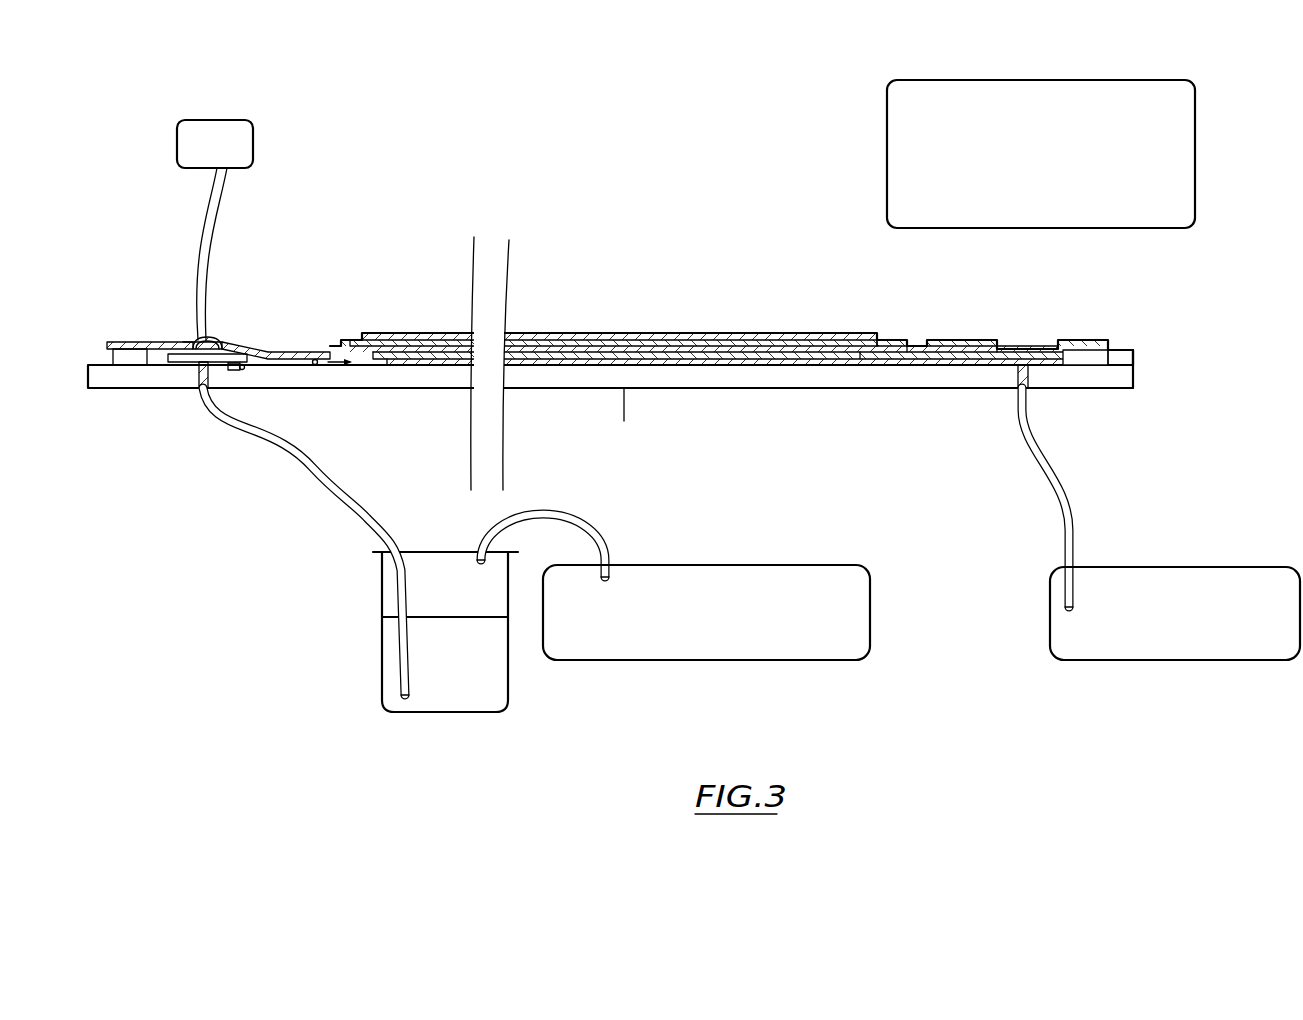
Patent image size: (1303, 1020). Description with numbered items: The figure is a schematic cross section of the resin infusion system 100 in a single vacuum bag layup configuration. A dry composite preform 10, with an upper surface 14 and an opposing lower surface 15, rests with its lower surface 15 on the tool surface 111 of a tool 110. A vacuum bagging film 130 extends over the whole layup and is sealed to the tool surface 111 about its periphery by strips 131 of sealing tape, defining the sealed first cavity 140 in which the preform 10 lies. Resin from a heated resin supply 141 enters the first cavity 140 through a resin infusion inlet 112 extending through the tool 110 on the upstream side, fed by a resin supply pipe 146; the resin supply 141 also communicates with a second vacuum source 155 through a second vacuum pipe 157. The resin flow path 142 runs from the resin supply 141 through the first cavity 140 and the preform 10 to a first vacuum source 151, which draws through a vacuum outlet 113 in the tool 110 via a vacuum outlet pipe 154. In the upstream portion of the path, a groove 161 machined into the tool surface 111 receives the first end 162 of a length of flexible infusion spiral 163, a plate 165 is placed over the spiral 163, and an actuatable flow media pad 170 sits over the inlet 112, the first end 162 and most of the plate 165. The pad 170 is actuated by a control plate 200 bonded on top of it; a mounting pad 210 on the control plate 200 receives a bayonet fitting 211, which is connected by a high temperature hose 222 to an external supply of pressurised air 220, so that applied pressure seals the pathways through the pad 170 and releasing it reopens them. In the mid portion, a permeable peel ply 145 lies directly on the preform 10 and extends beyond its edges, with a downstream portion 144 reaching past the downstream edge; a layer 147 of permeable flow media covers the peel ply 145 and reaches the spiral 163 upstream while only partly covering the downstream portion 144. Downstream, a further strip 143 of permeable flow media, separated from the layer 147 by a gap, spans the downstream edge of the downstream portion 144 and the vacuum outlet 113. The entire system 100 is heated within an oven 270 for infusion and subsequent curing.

The composite preform 10 is at (658, 367).
The upper surface 14 is at (655, 352).
The lower surface 15 is at (769, 367).
The resin infusion system 100 is at (515, 257).
The tool 110 is at (551, 377).
The tool surface 111 is at (1133, 365).
The resin infusion inlet 112 is at (190, 384).
The vacuum outlet 113 is at (1017, 382).
The vacuum bagging film 130 is at (556, 334).
The strips of sealing tape 131 is at (128, 357).
The first cavity 140 is at (468, 327).
The resin supply 141 is at (456, 656).
The resin flow path 142 is at (338, 372).
The strip of permeable flow media 143 is at (1088, 358).
The downstream portion of the peel ply 144 is at (903, 367).
The peel ply 145 is at (775, 340).
The resin supply pipe 146 is at (363, 500).
The layer of permeable flow media 147 is at (699, 346).
The first vacuum source 151 is at (1222, 636).
The vacuum outlet pipe 154 is at (1060, 537).
The second vacuum source 155 is at (660, 636).
The second vacuum pipe 157 is at (553, 517).
The groove 161 is at (237, 372).
The first end of the flexible infusion spiral 162 is at (203, 376).
The flexible infusion spiral 163 is at (244, 371).
The plate 165 is at (243, 340).
The actuatable flow media pad 170 is at (157, 345).
The control plate 200 is at (160, 340).
The mounting pad 210 is at (177, 340).
The bayonet fitting 211 is at (183, 340).
The supply of pressurised air 220 is at (196, 137).
The high temperature hose 222 is at (250, 127).
The oven 270 is at (995, 178).